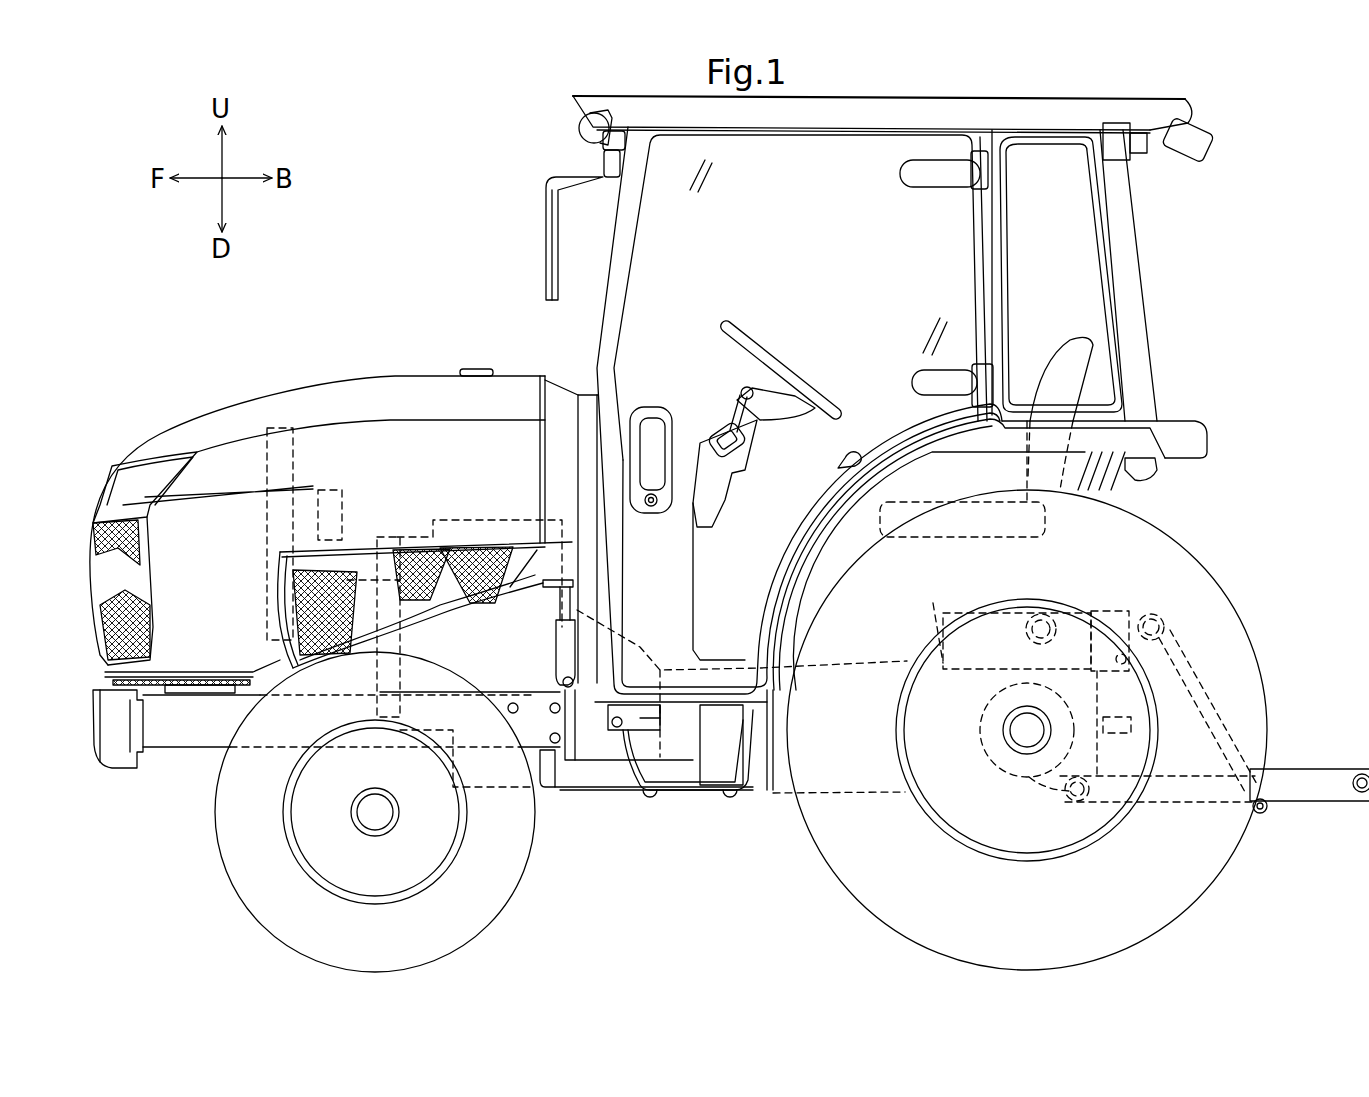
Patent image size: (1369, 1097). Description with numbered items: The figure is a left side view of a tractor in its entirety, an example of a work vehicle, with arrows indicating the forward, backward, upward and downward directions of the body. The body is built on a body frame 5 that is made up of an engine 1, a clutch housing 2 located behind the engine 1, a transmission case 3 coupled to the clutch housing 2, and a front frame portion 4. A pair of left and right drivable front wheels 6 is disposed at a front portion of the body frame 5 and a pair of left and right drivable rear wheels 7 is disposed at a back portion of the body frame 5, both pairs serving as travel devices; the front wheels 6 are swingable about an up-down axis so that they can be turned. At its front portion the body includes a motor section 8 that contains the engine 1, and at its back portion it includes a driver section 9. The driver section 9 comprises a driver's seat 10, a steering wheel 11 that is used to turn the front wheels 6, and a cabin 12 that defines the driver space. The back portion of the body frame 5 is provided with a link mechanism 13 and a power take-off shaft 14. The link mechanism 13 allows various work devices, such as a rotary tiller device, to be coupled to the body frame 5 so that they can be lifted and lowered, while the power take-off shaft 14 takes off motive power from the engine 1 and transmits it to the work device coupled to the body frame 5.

The engine 1 is at (478, 520).
The clutch housing 2 is at (640, 647).
The transmission case 3 is at (777, 786).
The front frame portion 4 is at (177, 740).
The body frame 5 is at (625, 803).
The front wheels 6 is at (491, 918).
The rear wheels 7 is at (1210, 882).
The motor section 8 is at (208, 422).
The driver section 9 is at (660, 337).
The driver's seat 10 is at (927, 497).
The steering wheel 11 is at (765, 357).
The cabin 12 is at (1130, 297).
The link mechanism 13 is at (1319, 767).
The power take-off shaft 14 is at (1133, 727).